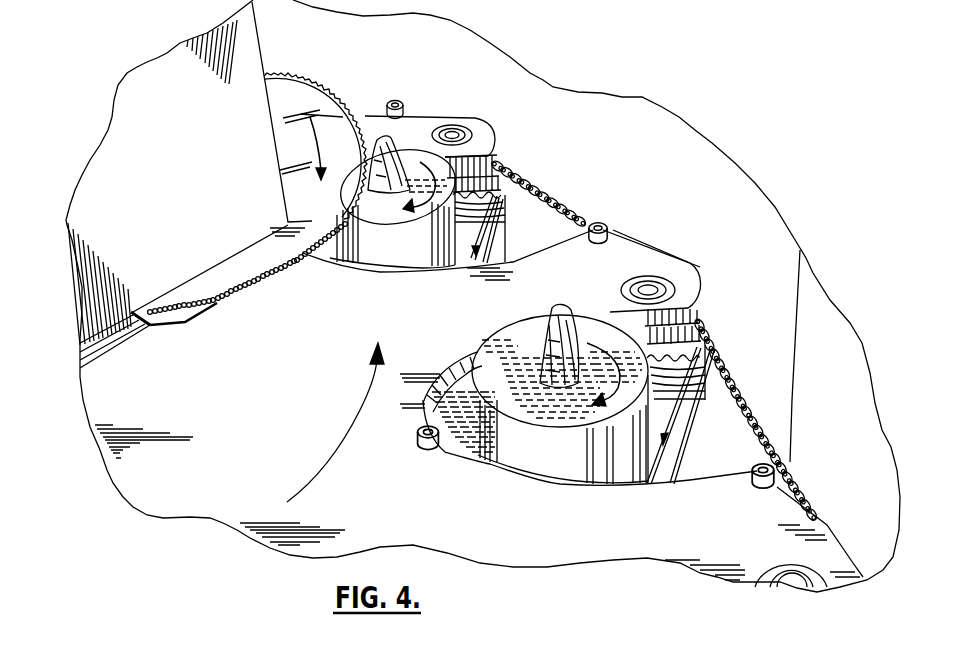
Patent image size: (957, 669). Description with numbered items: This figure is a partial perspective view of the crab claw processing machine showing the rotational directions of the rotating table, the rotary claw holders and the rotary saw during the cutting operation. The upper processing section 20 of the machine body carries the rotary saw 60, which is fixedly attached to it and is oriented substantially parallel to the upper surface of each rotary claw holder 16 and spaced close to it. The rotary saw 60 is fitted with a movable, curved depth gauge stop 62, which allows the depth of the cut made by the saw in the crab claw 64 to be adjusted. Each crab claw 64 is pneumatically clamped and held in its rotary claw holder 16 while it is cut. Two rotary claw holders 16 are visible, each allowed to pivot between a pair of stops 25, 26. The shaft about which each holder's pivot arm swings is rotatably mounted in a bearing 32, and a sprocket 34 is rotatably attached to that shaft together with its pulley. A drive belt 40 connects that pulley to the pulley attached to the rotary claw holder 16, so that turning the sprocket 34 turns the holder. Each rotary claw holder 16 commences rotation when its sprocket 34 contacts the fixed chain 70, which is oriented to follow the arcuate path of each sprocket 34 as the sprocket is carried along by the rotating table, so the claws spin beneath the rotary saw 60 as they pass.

The upper processing section 20 is at (132, 98).
The rotary saw 60 is at (313, 97).
The depth gauge stop 62 is at (190, 323).
The rotary claw holder 16 is at (398, 253).
The crab claw 64 is at (400, 165).
The bearing 32 is at (450, 138).
The sprocket 34 is at (510, 175).
The drive belt 40 is at (500, 200).
The fixed chain 70 is at (550, 200).
The stop 26 is at (420, 440).
The stop 25 is at (758, 480).